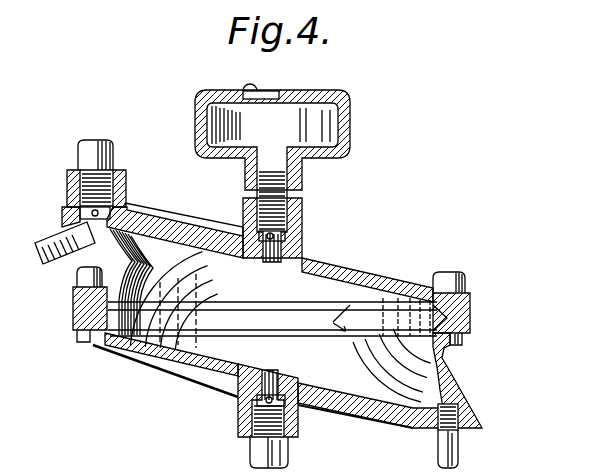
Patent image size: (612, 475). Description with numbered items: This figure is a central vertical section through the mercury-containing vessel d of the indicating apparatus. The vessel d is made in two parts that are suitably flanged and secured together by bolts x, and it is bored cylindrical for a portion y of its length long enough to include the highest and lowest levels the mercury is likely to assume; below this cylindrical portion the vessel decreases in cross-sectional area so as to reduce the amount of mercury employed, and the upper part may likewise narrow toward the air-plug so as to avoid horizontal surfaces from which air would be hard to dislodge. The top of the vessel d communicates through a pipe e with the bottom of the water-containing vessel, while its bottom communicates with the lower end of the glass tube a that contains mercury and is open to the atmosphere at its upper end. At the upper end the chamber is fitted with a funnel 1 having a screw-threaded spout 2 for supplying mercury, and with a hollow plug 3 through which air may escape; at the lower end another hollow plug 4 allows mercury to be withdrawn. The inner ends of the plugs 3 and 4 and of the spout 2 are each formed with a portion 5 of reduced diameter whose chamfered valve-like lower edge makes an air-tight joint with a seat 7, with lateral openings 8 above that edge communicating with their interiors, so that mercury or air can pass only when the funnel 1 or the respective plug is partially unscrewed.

The funnel 1 is at (272, 141).
The screw-threaded spout 2 is at (286, 214).
The hollow plug 3 is at (118, 180).
The hollow plug 4 is at (282, 436).
The portion of reduced diameter 5 is at (80, 214).
The seat 7 is at (282, 248).
The lateral openings 8 is at (112, 214).
The mercury-containing vessel d is at (272, 315).
The pipe e is at (76, 258).
The bolts x is at (76, 278).
The cylindrical portion y is at (330, 321).
The glass tube a is at (442, 440).